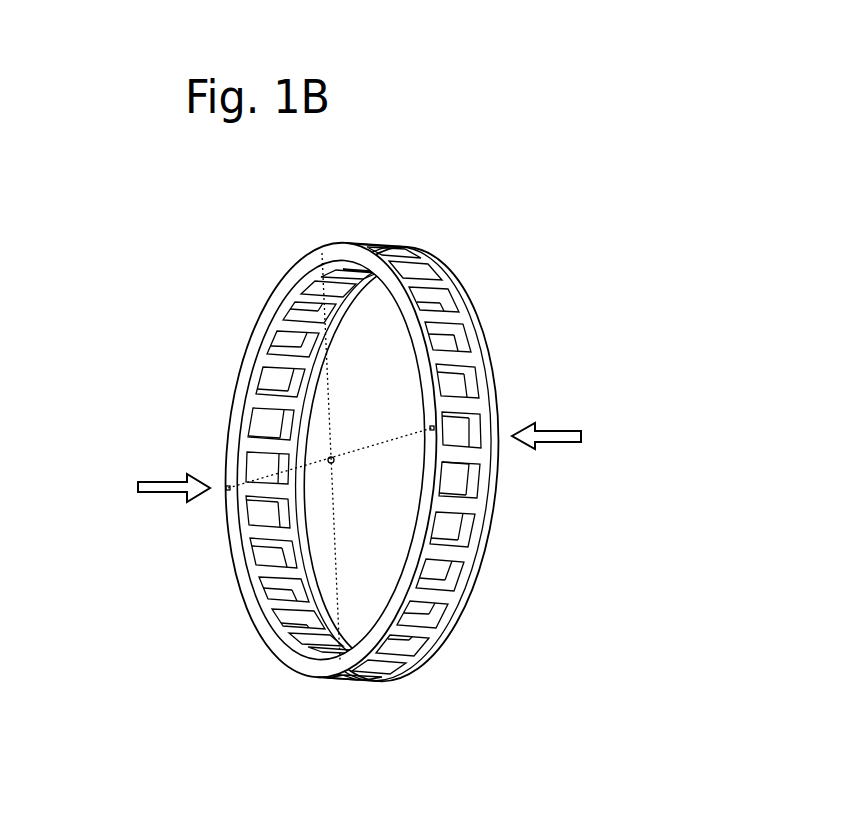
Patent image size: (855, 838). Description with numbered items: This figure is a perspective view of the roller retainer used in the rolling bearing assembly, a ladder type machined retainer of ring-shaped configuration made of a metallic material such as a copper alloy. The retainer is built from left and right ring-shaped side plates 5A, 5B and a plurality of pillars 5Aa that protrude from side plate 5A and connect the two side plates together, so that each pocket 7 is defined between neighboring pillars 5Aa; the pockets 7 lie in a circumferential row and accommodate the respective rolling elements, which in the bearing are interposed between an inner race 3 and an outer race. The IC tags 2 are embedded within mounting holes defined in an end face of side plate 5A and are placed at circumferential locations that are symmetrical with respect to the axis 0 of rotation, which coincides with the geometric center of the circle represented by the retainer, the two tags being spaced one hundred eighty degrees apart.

The inner race 3 is at (359, 482).
The pocket 7 is at (467, 383).
The IC tag 2 is at (225, 480).
The axis of rotation 0 is at (334, 463).
The side plate 5A is at (393, 633).
The side plate 5B is at (453, 622).
The pillar 5Aa is at (445, 585).